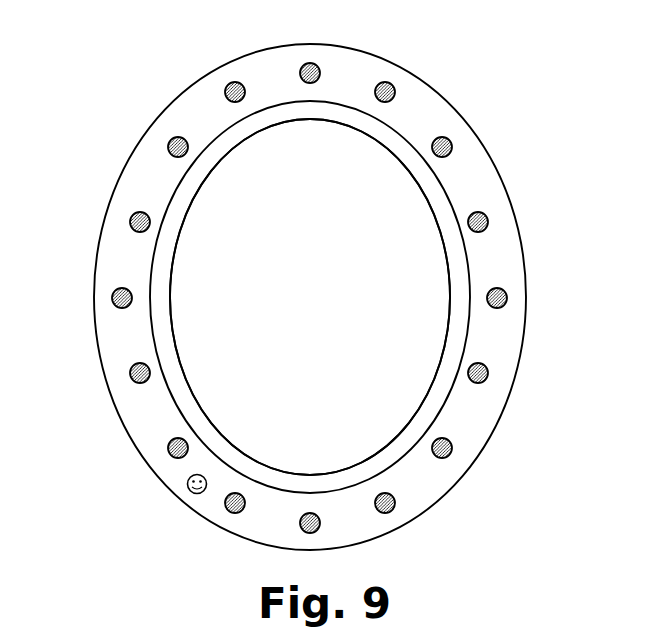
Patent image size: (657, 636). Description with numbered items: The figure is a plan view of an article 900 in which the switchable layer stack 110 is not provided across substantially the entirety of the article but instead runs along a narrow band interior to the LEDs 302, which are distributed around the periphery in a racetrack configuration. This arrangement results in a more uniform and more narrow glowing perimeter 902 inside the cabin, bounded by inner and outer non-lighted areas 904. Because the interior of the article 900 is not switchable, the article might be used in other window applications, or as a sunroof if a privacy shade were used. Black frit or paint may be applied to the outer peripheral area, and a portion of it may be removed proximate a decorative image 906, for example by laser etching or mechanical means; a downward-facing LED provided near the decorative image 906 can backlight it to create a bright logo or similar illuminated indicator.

The article 900 is at (434, 57).
The non-lighted areas 904 is at (412, 243).
The switchable layer stack 110 is at (166, 356).
The glowing perimeter 902 is at (454, 356).
The LEDs 302 is at (117, 289).
The decorative image 906 is at (187, 484).